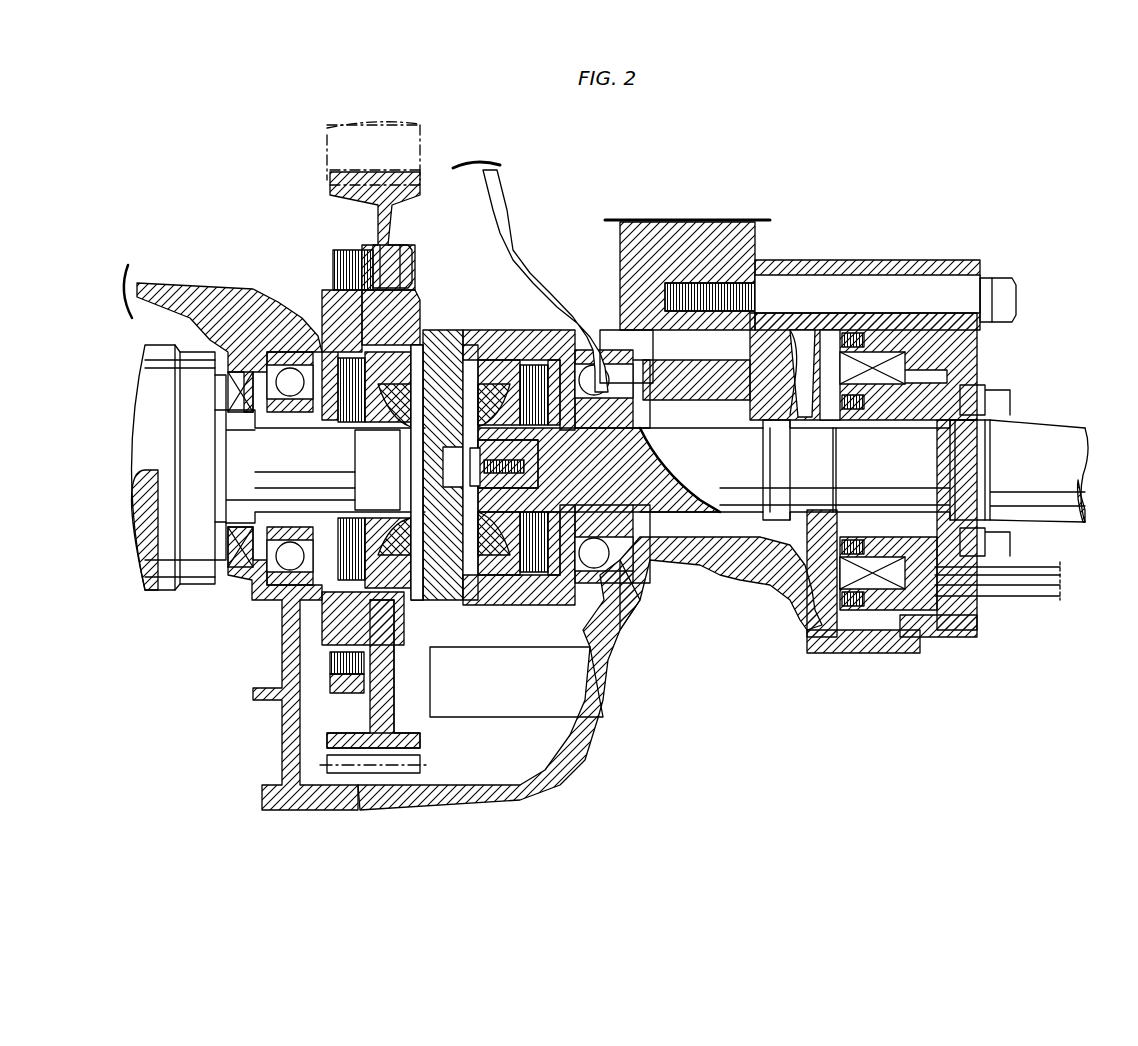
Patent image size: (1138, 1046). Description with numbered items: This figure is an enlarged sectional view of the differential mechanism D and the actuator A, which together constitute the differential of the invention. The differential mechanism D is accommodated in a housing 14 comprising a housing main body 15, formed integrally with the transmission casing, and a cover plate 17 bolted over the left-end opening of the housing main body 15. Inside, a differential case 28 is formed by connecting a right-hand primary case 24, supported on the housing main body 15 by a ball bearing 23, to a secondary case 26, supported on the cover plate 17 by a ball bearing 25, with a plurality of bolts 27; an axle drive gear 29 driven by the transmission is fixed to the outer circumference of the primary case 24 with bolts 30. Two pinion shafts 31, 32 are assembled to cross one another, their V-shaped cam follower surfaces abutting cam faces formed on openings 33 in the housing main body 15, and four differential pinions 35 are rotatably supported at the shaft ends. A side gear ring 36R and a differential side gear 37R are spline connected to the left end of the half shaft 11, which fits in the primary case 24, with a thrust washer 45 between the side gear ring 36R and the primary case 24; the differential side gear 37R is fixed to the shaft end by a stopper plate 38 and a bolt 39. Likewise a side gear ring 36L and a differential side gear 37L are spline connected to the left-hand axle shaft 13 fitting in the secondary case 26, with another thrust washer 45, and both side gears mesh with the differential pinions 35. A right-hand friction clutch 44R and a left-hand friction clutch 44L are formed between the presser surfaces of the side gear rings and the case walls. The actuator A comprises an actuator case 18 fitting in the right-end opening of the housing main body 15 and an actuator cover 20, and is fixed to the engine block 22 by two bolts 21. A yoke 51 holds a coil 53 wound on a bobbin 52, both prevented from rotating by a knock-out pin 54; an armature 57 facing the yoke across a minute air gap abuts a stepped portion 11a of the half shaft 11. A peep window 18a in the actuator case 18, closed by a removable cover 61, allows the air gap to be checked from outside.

The half shaft 11 is at (745, 470).
The stepped portion 11a is at (833, 490).
The left-hand axle shaft 13 is at (195, 565).
The housing 14 is at (540, 771).
The housing main body 15 is at (456, 797).
The cover plate 17 is at (282, 768).
The actuator case 18 is at (748, 585).
The peep window 18a is at (845, 642).
The actuator cover 20 is at (978, 352).
The bolts 21 is at (1000, 300).
The engine block 22 is at (700, 245).
The ball bearing 23 is at (594, 377).
The primary case 24 is at (507, 345).
The ball bearing 25 is at (290, 378).
The secondary case 26 is at (332, 300).
The bolts 27 is at (348, 680).
The differential case 28 is at (464, 620).
The axle drive gear 29 is at (420, 200).
The bolts 30 is at (410, 263).
The pinion shaft 31 is at (448, 345).
The pinion shaft 32 is at (422, 468).
The openings 33 is at (400, 342).
The differential pinions 35 is at (443, 465).
The side gear ring 36L is at (405, 600).
The side gear ring 36R is at (493, 570).
The differential side gear 37L is at (415, 522).
The differential side gear 37R is at (507, 492).
The stopper plate 38 is at (482, 468).
The bolt 39 is at (524, 468).
The left-hand friction clutch 44L is at (340, 600).
The right-hand friction clutch 44R is at (532, 580).
The thrust washer 45 is at (308, 525).
The yoke 51 is at (906, 395).
The bobbin 52 is at (906, 555).
The coil 53 is at (880, 392).
The knock-out pin 54 is at (925, 357).
The armature 57 is at (795, 407).
The removable cover 61 is at (900, 652).
The actuator A is at (1002, 396).
The differential mechanism D is at (530, 255).